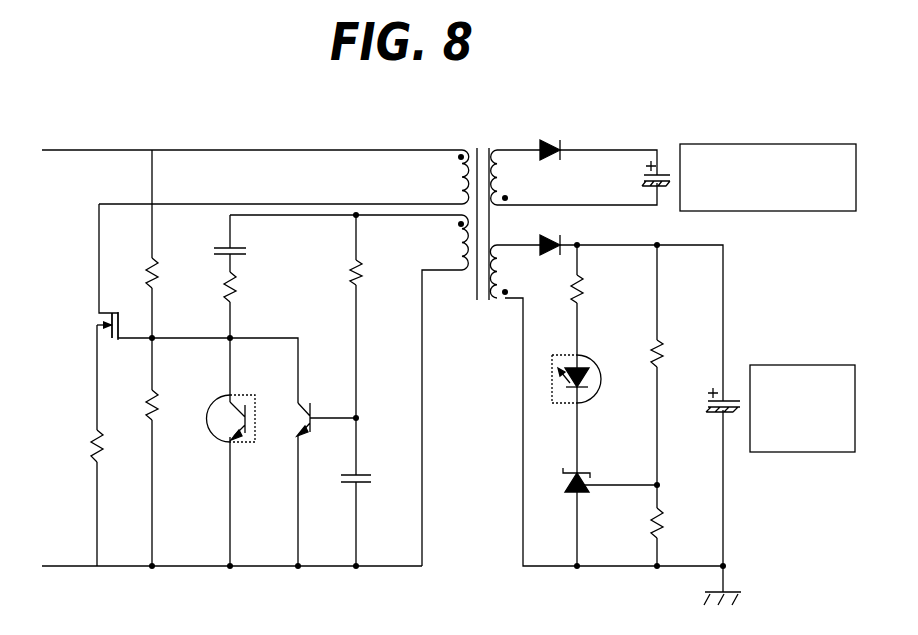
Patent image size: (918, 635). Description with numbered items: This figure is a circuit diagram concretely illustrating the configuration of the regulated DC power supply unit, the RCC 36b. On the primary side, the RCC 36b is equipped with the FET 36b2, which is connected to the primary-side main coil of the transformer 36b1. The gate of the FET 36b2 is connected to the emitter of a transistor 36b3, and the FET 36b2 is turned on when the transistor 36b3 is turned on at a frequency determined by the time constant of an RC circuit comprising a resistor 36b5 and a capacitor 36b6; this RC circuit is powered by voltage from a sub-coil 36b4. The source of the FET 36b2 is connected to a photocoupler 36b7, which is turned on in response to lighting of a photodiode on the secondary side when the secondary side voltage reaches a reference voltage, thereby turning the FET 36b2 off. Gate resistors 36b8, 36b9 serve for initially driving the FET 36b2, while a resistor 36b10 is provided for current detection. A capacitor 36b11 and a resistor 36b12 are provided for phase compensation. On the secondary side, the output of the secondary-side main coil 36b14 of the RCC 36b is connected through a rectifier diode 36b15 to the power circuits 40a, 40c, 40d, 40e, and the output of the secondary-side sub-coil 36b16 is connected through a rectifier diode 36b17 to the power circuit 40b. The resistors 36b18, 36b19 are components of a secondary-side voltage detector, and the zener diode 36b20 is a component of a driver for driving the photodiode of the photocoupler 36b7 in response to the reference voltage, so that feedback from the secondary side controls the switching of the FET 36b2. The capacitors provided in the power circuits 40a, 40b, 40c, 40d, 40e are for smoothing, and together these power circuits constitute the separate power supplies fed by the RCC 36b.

The RCC 36b is at (272, 140).
The transformer 36b1 is at (459, 148).
The FET 36b2 is at (97, 323).
The transistor 36b3 is at (328, 395).
The sub-coil 36b4 is at (465, 273).
The resistor 36b5 is at (358, 262).
The capacitor 36b6 is at (364, 483).
The photocoupler 36b7 is at (219, 426).
The gate resistor 36b8 is at (153, 256).
The gate resistor 36b9 is at (150, 394).
The resistor for current detection 36b10 is at (96, 434).
The capacitor 36b11 is at (238, 247).
The resistor 36b12 is at (233, 297).
The secondary-side main coil 36b14 is at (502, 150).
The rectifier diode 36b15 is at (552, 145).
The secondary-side sub-coil 36b16 is at (498, 293).
The rectifier diode 36b17 is at (553, 243).
The resistor 36b18 is at (655, 343).
The resistor 36b19 is at (650, 510).
The zener diode 36b20 is at (565, 485).
The power circuit 40a is at (768, 177).
The power circuit 40b is at (802, 408).
The power circuit 40c is at (768, 177).
The power circuit 40d is at (768, 177).
The power circuit 40e is at (768, 177).